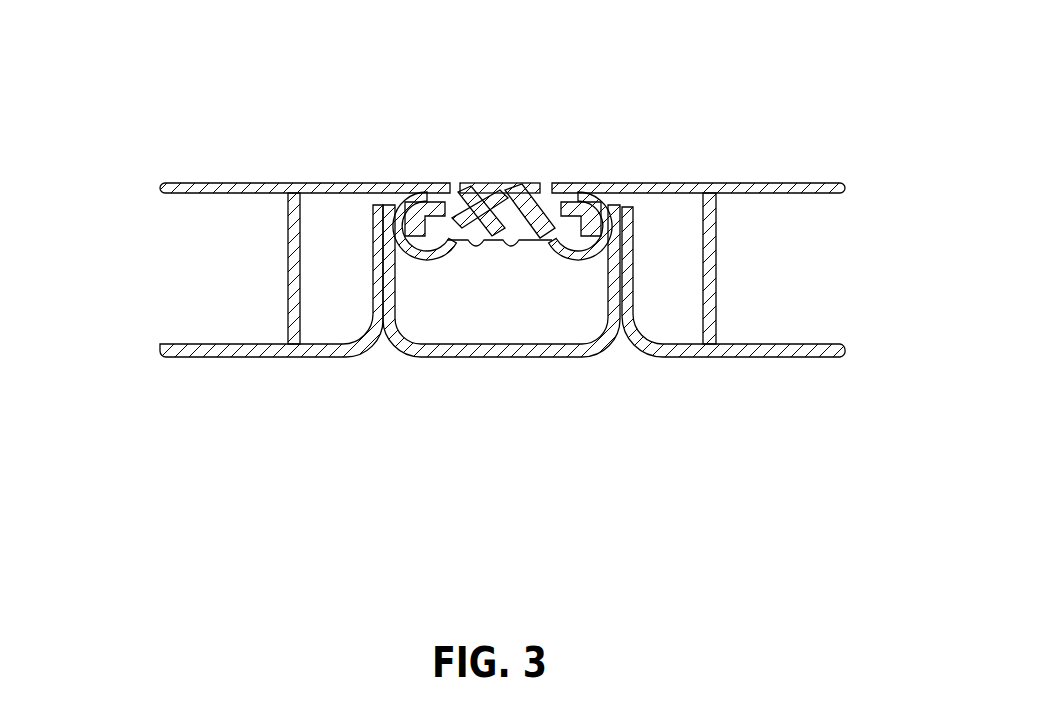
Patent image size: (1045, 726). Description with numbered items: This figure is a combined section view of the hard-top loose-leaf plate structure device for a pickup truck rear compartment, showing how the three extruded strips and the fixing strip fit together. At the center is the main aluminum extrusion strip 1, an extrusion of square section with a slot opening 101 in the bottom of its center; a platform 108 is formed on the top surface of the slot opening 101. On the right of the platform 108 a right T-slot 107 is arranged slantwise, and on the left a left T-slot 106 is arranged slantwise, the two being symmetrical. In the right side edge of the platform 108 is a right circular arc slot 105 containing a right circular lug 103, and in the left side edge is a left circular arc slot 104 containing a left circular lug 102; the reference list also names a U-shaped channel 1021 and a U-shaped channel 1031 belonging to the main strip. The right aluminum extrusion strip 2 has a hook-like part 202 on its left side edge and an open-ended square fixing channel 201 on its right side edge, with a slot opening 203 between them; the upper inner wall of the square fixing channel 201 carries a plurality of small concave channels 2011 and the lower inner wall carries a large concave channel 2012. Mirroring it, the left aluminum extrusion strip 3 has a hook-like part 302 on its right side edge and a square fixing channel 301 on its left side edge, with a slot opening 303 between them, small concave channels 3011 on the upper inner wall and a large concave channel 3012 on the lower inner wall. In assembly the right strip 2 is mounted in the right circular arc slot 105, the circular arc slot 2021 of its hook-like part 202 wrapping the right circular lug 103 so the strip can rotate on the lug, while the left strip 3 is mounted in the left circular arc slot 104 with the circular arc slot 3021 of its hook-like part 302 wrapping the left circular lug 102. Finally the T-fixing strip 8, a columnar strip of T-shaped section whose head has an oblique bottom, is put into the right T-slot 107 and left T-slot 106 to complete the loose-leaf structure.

The main aluminum extrusion strip 1 is at (509, 282).
The slot opening 101 is at (439, 330).
The left circular lug 102 is at (425, 185).
The U-shaped channel 1021 is at (395, 317).
The right circular lug 103 is at (617, 185).
The U-shaped channel 1031 is at (574, 245).
The left circular arc slot 104 is at (378, 183).
The right circular arc slot 105 is at (612, 300).
The left T-slot 106 is at (493, 185).
The right T-slot 107 is at (523, 185).
The platform 108 is at (505, 185).
The T-fixing strip 8 is at (478, 185).
The right aluminum extrusion strip 2 is at (711, 242).
The square fixing channel 201 is at (767, 285).
The small concave channel 2011 is at (818, 250).
The large concave channel 2012 is at (800, 344).
The hook-like part 202 is at (549, 330).
The circular arc slot 2021 is at (590, 185).
The slot opening 203 is at (682, 312).
The left aluminum extrusion strip 3 is at (290, 279).
The square fixing channel 301 is at (235, 287).
The small concave channel 3011 is at (250, 193).
The large concave channel 3012 is at (205, 344).
The hook-like part 302 is at (458, 245).
The circular arc slot 3021 is at (410, 185).
The slot opening 303 is at (332, 230).